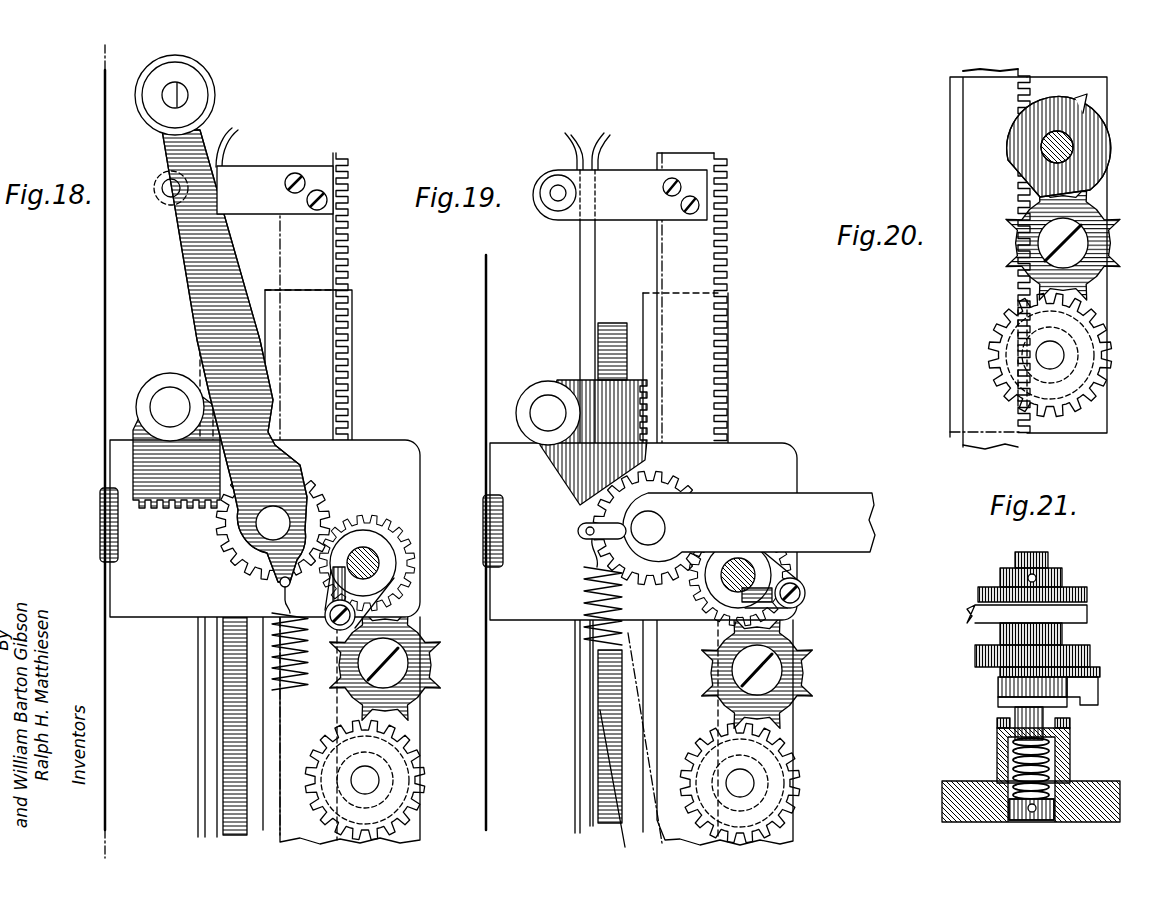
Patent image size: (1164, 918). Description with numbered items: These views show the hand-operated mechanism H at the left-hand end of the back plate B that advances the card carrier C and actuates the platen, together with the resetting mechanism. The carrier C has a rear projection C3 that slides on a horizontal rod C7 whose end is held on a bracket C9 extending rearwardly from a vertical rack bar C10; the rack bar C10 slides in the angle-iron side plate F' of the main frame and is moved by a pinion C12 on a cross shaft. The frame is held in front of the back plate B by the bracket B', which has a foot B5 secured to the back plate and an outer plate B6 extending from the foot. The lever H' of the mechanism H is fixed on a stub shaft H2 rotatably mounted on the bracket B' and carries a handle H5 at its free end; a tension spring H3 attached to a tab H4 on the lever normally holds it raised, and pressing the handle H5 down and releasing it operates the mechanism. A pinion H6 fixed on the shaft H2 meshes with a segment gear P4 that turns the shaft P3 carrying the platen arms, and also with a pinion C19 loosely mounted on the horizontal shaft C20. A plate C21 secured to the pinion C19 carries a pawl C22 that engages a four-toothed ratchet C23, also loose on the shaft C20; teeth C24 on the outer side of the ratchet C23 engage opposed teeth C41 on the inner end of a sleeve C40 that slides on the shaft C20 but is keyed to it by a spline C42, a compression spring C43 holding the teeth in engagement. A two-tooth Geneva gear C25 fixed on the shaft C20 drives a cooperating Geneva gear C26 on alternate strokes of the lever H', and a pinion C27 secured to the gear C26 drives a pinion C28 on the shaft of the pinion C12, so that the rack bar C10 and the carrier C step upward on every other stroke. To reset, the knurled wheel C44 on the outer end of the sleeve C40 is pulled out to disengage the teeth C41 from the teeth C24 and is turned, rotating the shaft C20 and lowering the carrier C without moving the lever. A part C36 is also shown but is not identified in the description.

In FIG. 18, the back plate B is at (122, 451).
In FIG. 18, the bracket B' is at (367, 473).
In FIG. 19, the bracket B' is at (740, 470).
In FIG. 18, the foot B5 is at (105, 522).
In FIG. 19, the foot B5 is at (498, 537).
In FIG. 18, the outer plate B6 is at (402, 450).
In FIG. 19, the outer plate B6 is at (807, 420).
In FIG. 18, the card carrier C is at (180, 752).
In FIG. 19, the card carrier C is at (572, 145).
In FIG. 19, the projection C3 is at (570, 220).
In FIG. 18, the horizontal rod C7 is at (167, 207).
In FIG. 19, the horizontal rod C7 is at (552, 208).
In FIG. 18, the bracket C9 is at (250, 183).
In FIG. 19, the bracket C9 is at (620, 195).
In FIG. 18, the rack bar C10 is at (183, 823).
In FIG. 19, the rack bar C10 is at (698, 257).
In FIG. 20, the rack bar C10 is at (988, 110).
In FIG. 18, the pinion C12 is at (393, 770).
In FIG. 19, the pinion C12 is at (800, 743).
In FIG. 20, the pinion C12 is at (1010, 307).
In FIG. 18, the pinion C19 is at (380, 535).
In FIG. 19, the pinion C19 is at (697, 587).
In FIG. 21, the pinion C19 is at (1060, 652).
In FIG. 18, the horizontal shaft C20 is at (378, 568).
In FIG. 19, the horizontal shaft C20 is at (755, 577).
In FIG. 20, the horizontal shaft C20 is at (1043, 145).
In FIG. 21, the horizontal shaft C20 is at (1045, 553).
In FIG. 18, the plate C21 is at (380, 590).
In FIG. 19, the plate C21 is at (790, 598).
In FIG. 21, the plate C21 is at (1063, 672).
In FIG. 18, the pawl C22 is at (400, 607).
In FIG. 19, the pawl C22 is at (800, 600).
In FIG. 21, the pawl C22 is at (1100, 693).
In FIG. 18, the four-toothed ratchet C23 is at (378, 565).
In FIG. 19, the four-toothed ratchet C23 is at (770, 560).
In FIG. 21, the four-toothed ratchet C23 is at (1047, 687).
In FIG. 18, the teeth C24 is at (372, 545).
In FIG. 19, the teeth C24 is at (767, 540).
In FIG. 21, the teeth C24 is at (1007, 702).
In FIG. 20, the two-tooth Geneva gear C25 is at (1082, 128).
In FIG. 21, the two-tooth Geneva gear C25 is at (1073, 588).
In FIG. 18, the Geneva gear C26 is at (413, 653).
In FIG. 19, the Geneva gear C26 is at (807, 660).
In FIG. 20, the Geneva gear C26 is at (1010, 225).
In FIG. 18, the pinion C27 is at (422, 678).
In FIG. 19, the pinion C27 is at (817, 673).
In FIG. 20, the pinion C27 is at (1010, 265).
In FIG. 18, the pinion C28 is at (402, 800).
In FIG. 19, the pinion C28 is at (780, 790).
In FIG. 20, the pinion C28 is at (993, 352).
In FIG. 18, the knurled slide C36 is at (233, 687).
In FIG. 19, the knurled slide C36 is at (618, 322).
In FIG. 21, the sleeve C40 is at (997, 747).
In FIG. 21, the teeth C41 is at (1007, 723).
In FIG. 21, the spline C42 is at (1020, 820).
In FIG. 21, the compression spring C43 is at (1053, 767).
In FIG. 21, the knurled wheel C44 is at (947, 790).
In FIG. 18, the side plate F' is at (284, 505).
In FIG. 19, the side plate F' is at (658, 569).
In FIG. 20, the side plate F' is at (1007, 262).
In FIG. 18, the manually operated mechanism H is at (234, 356).
In FIG. 18, the lever H' is at (171, 315).
In FIG. 19, the lever H' is at (749, 509).
In FIG. 18, the stub shaft H2 is at (290, 520).
In FIG. 19, the stub shaft H2 is at (650, 528).
In FIG. 18, the tension spring H3 is at (273, 640).
In FIG. 18, the tab H4 is at (273, 567).
In FIG. 19, the tab H4 is at (580, 543).
In FIG. 18, the handle H5 is at (214, 97).
In FIG. 19, the handle H5 is at (583, 573).
In FIG. 18, the pinion H6 is at (313, 497).
In FIG. 19, the pinion H6 is at (697, 473).
In FIG. 18, the shaft P3 is at (170, 403).
In FIG. 19, the shaft P3 is at (548, 413).
In FIG. 18, the segment gear P4 is at (158, 500).
In FIG. 19, the segment gear P4 is at (623, 410).